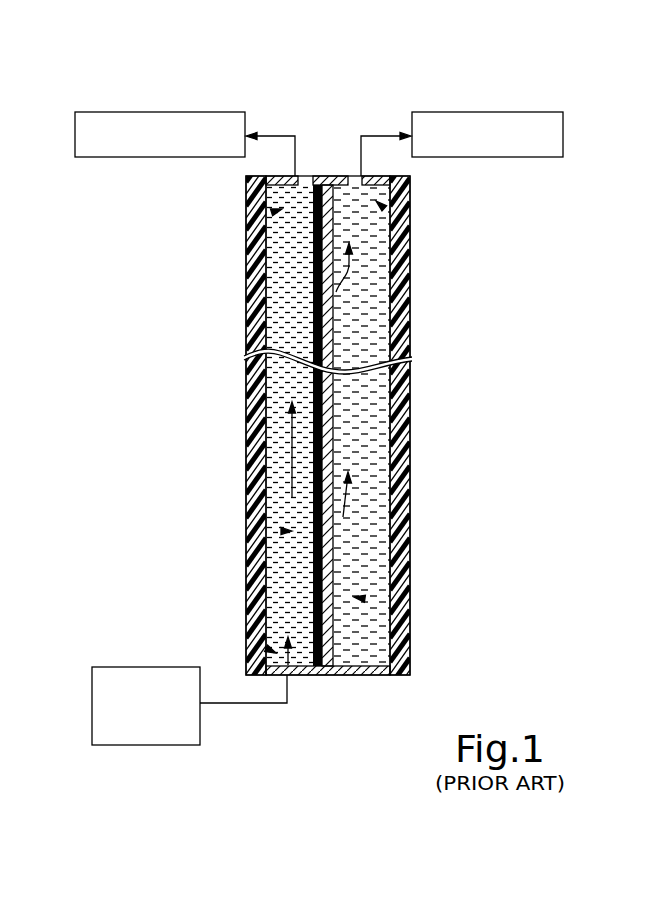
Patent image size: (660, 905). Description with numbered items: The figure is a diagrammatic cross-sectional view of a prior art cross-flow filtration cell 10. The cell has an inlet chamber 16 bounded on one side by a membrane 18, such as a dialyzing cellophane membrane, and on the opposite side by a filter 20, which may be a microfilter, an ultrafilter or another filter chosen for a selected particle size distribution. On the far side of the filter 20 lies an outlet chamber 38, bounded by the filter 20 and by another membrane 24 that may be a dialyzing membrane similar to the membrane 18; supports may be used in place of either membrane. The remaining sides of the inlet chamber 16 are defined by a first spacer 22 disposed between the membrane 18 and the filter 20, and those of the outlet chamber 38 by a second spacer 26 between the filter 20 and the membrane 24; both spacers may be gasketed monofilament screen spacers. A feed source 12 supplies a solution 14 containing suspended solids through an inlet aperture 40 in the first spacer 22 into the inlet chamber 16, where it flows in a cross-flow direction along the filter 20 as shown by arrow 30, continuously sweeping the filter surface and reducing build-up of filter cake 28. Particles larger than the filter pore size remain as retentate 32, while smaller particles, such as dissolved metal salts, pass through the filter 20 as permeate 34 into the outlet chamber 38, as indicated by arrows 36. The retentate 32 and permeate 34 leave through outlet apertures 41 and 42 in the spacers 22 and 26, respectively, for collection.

The cross-flow filtration cell 10 is at (462, 329).
The feed source 12 is at (185, 745).
The solution 14 is at (274, 725).
The inlet chamber 16 is at (274, 257).
The membrane 18 is at (253, 391).
The filter 20 is at (336, 138).
The first spacer 22 is at (313, 176).
The membrane 24 is at (400, 418).
The second spacer 26 is at (347, 176).
The filter cake 28 is at (283, 531).
The arrow 30 is at (290, 456).
The retentate 32 is at (222, 112).
The permeate 34 is at (483, 118).
The arrows 36 is at (336, 292).
The outlet chamber 38 is at (364, 600).
The inlet aperture 40 is at (267, 649).
The outlet aperture 41 is at (273, 212).
The outlet aperture 42 is at (384, 208).